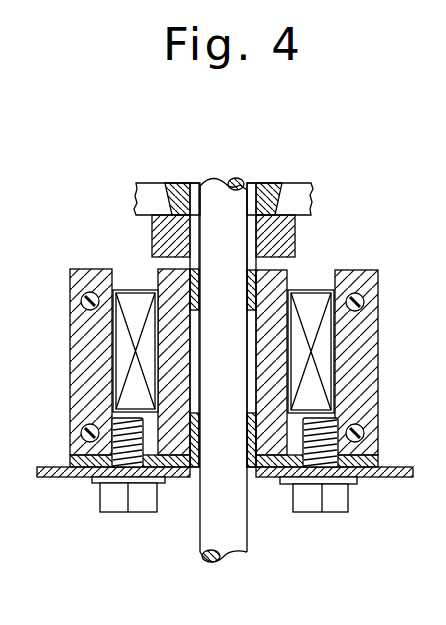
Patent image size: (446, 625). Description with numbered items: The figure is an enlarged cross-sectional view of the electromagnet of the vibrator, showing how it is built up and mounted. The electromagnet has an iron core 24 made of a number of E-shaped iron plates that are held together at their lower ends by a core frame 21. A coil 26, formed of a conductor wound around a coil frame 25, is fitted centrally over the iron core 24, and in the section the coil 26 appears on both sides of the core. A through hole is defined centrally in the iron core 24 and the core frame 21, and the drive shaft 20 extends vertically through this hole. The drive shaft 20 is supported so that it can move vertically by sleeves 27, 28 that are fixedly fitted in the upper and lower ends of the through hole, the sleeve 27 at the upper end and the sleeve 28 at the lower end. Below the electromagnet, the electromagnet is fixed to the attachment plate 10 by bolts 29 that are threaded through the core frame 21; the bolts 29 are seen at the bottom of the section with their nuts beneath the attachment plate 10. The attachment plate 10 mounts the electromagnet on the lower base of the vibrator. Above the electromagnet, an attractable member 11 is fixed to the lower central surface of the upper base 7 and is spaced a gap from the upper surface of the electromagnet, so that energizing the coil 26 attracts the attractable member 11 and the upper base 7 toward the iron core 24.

The upper base 7 is at (300, 193).
The attractable member 11 is at (288, 234).
The iron core 24 is at (80, 373).
The coil frame 25 is at (140, 288).
The sleeve 27 is at (287, 285).
The coil 26 is at (112, 337).
The sleeve 28 is at (186, 440).
The core frame 21 is at (72, 460).
The attachment plate 10 is at (53, 480).
The bolts 29 is at (128, 510).
The drive shaft 20 is at (240, 552).